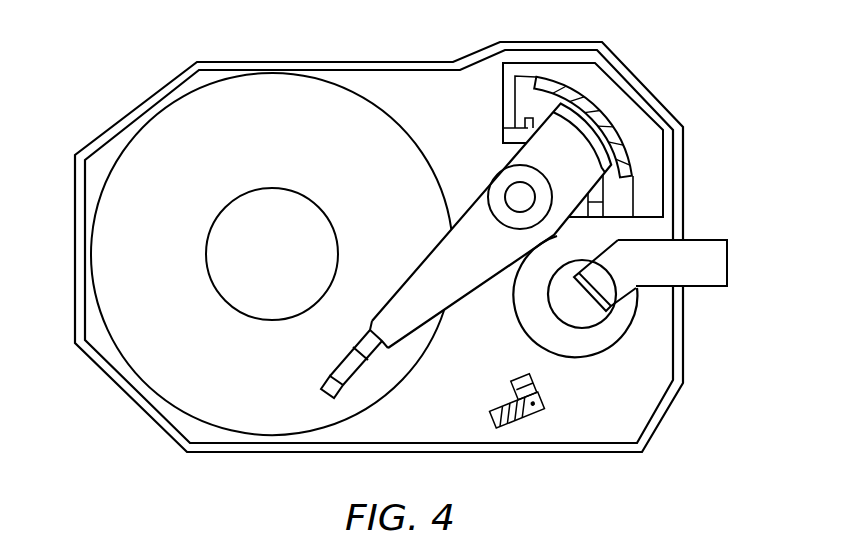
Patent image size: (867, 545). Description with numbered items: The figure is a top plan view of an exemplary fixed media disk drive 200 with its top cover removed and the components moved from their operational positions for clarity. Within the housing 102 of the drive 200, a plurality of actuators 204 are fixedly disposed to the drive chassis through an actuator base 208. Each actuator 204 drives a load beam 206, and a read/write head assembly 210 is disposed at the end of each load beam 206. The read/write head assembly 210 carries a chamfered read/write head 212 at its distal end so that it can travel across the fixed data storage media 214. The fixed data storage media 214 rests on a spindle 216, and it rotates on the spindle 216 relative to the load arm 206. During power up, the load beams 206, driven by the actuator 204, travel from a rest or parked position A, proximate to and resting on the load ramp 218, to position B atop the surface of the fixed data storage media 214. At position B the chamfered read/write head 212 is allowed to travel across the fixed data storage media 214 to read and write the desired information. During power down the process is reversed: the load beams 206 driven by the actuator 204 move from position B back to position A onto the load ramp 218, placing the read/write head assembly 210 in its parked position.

The housing 102 is at (147, 100).
The fixed disk drive 200 is at (115, 485).
The actuator 204 is at (518, 180).
The load beam 206 is at (490, 269).
The actuator base 208 is at (603, 92).
The read/write head assembly 210 is at (352, 348).
The chamfered read/write head 212 is at (322, 387).
The fixed data storage media 214 is at (168, 296).
The spindle 216 is at (287, 260).
The load ramp 218 is at (543, 413).
The rest or parked position A is at (473, 417).
The operating position B is at (202, 341).